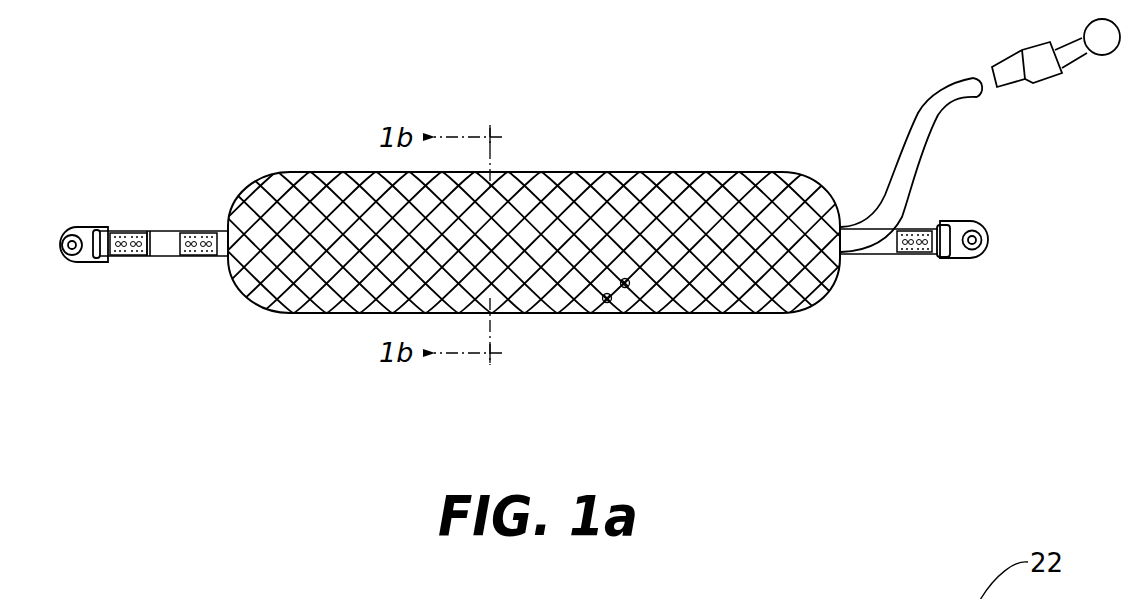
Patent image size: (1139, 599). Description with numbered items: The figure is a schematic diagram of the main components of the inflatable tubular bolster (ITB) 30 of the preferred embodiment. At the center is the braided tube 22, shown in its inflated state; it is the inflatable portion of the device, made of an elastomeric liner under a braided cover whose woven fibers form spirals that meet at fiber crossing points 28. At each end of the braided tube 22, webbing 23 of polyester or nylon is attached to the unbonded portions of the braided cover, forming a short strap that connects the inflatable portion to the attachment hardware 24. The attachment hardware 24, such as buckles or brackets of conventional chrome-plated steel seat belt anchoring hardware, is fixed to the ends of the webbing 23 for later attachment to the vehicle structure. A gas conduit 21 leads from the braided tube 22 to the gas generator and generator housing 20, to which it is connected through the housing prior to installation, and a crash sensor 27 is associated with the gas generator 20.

The gas generator and generator housing 20 is at (1022, 50).
The gas conduit 21 is at (910, 133).
The braided tube 22 is at (683, 313).
The webbing 23 is at (168, 231).
The attachment hardware 24 is at (93, 263).
The crash sensor 27 is at (1106, 58).
The fiber crossing points 28 is at (625, 288).
The inflatable tubular bolster (ITB) 30 is at (668, 152).